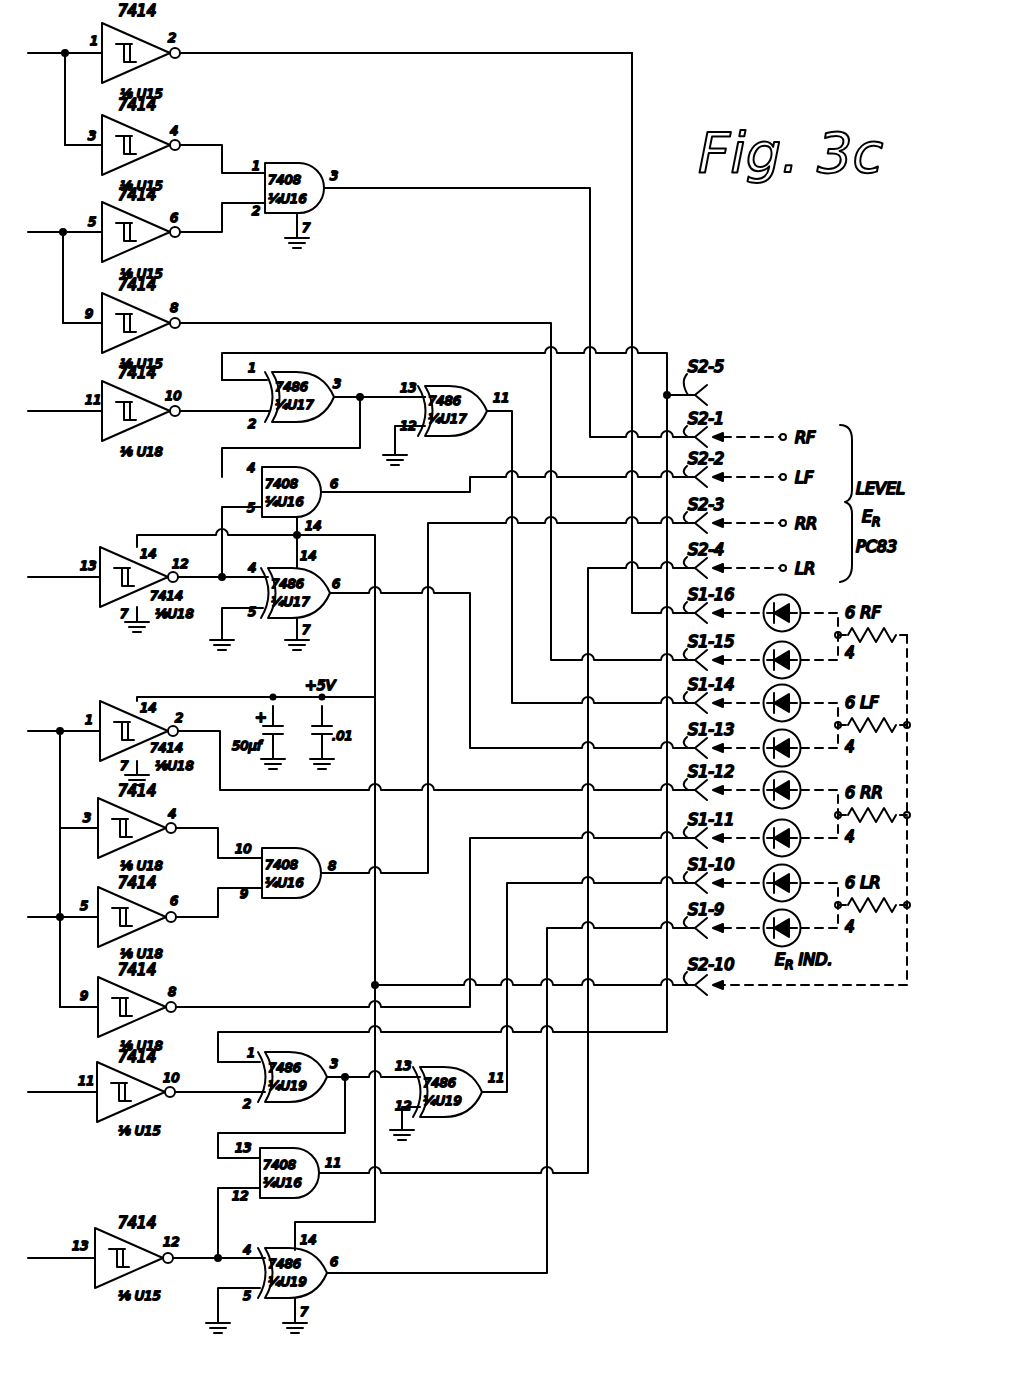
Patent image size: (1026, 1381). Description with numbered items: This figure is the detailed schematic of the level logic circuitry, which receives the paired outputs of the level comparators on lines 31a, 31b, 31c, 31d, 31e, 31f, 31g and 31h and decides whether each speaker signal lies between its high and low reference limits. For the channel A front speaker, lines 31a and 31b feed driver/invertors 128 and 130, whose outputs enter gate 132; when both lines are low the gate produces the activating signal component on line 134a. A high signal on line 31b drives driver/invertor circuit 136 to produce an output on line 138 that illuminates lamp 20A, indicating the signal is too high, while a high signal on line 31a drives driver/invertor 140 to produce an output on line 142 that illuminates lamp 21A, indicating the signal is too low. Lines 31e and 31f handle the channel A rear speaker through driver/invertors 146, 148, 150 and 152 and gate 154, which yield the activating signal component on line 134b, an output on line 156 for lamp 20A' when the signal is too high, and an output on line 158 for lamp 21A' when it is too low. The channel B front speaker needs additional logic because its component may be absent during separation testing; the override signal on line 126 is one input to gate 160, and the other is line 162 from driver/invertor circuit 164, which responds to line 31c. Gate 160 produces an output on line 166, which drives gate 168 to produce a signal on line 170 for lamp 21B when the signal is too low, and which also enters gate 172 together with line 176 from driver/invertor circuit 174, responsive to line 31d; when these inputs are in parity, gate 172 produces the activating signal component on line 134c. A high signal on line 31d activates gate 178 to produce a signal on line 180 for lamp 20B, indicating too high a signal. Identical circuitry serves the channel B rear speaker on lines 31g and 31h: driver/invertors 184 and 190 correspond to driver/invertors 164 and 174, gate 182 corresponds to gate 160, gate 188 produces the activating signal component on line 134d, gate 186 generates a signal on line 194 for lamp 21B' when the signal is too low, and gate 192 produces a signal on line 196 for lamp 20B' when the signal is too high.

The line 31a is at (30, 53).
The line 31b is at (30, 232).
The line 31c is at (30, 411).
The line 31d is at (30, 577).
The line 31e is at (30, 731).
The line 31f is at (30, 917).
The line 31g is at (30, 1092).
The line 31h is at (30, 1258).
The line 126 is at (236, 353).
The driver/invertor 128 is at (98, 152).
The driver/invertor 130 is at (98, 240).
The gate 132 is at (316, 160).
The line 134a is at (452, 190).
The line 134b is at (612, 512).
The line 134c is at (410, 478).
The line 134d is at (612, 555).
The driver/invertor circuit 136 is at (96, 330).
The line 138 is at (222, 323).
The driver/invertor 140 is at (172, 38).
The line 142 is at (632, 112).
The driver/invertor 146 is at (94, 836).
The driver/invertor 148 is at (90, 895).
The driver/invertor 150 is at (94, 1014).
The driver/invertor 152 is at (118, 700).
The gate 154 is at (282, 848).
The line 156 is at (202, 1007).
The line 158 is at (645, 808).
The gate 160 is at (320, 418).
The line 162 is at (236, 406).
The driver/invertor circuit 164 is at (96, 420).
The line 166 is at (352, 390).
The gate 168 is at (448, 388).
The line 170 is at (502, 440).
The gate 172 is at (336, 510).
The driver/invertor circuit 174 is at (94, 585).
The line 176 is at (220, 503).
The gate 178 is at (325, 612).
The line 180 is at (385, 605).
The gate 182 is at (295, 1100).
The driver/invertor 184 is at (93, 1106).
The gate 186 is at (460, 1118).
The gate 188 is at (318, 1190).
The driver/invertor 190 is at (92, 1272).
The gate 192 is at (336, 1292).
The line 194 is at (645, 898).
The line 196 is at (398, 1274).
The lamp 20A is at (799, 663).
The lamp 20B is at (799, 751).
The lamp 20A' is at (801, 841).
The lamp 20B' is at (801, 931).
The lamp 21A is at (801, 609).
The lamp 21B is at (801, 700).
The lamp 21A' is at (803, 787).
The lamp 21B' is at (803, 880).